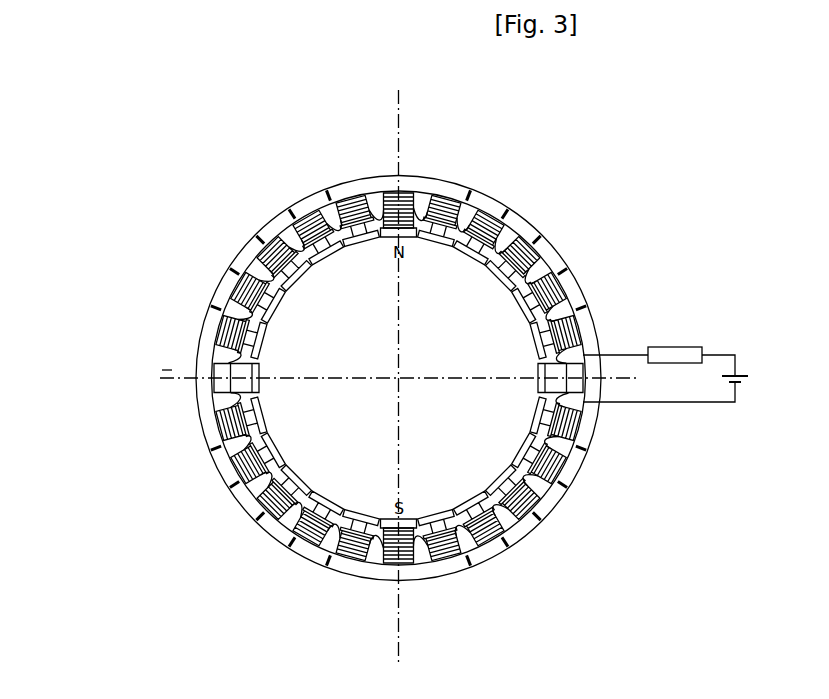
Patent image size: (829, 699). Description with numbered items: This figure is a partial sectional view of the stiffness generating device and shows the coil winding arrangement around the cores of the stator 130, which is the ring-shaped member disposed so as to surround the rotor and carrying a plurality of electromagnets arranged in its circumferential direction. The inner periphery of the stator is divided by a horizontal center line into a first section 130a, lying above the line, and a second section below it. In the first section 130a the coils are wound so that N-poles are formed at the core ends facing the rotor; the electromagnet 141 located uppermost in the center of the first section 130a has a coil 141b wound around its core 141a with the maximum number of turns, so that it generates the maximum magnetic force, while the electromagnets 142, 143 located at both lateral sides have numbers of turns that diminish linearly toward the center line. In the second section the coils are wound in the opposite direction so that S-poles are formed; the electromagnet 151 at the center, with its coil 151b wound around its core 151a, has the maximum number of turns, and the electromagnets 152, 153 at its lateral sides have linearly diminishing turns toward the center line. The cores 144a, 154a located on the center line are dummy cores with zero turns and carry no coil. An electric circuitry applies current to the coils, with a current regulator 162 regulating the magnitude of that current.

The stator 130 is at (362, 178).
The first section 130a is at (98, 272).
The electromagnet 141 is at (404, 154).
The core 141a is at (390, 190).
The coil 141b is at (410, 190).
The electromagnet 142 is at (592, 326).
The electromagnet 143 is at (205, 326).
The core 144a is at (520, 374).
The electromagnet 151 is at (403, 604).
The core 151a is at (392, 570).
The coil 151b is at (408, 570).
The electromagnet 152 is at (592, 430).
The electromagnet 153 is at (205, 430).
The core 154a is at (277, 374).
The current regulator 162 is at (675, 345).